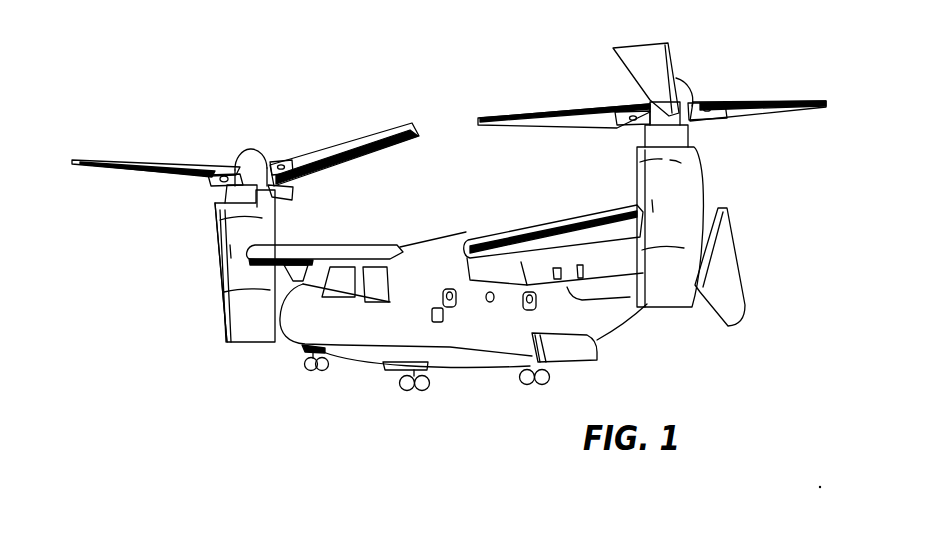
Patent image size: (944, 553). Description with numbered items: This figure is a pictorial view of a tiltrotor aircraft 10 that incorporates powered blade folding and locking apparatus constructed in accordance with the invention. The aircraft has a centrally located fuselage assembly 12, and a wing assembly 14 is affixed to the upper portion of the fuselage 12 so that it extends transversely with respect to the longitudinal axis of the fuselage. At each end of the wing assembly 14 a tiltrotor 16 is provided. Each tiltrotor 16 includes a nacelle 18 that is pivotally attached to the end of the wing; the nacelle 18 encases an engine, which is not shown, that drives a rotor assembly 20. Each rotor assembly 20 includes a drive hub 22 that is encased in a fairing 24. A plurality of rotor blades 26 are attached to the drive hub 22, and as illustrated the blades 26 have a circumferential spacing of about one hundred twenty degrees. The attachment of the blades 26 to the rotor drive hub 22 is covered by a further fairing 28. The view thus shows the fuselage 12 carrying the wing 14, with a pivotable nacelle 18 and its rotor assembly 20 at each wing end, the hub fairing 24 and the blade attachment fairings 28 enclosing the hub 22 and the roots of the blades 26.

The tiltrotor aircraft 10 is at (435, 76).
The fuselage assembly 12 is at (478, 352).
The wing assembly 14 is at (496, 220).
The tiltrotor 16 is at (270, 221).
The nacelle 18 is at (215, 212).
The rotor assembly 20 is at (156, 155).
The drive hub 22 is at (262, 152).
The fairing 24 is at (233, 152).
The rotor blades 26 is at (100, 158).
The fairing 28 is at (285, 157).